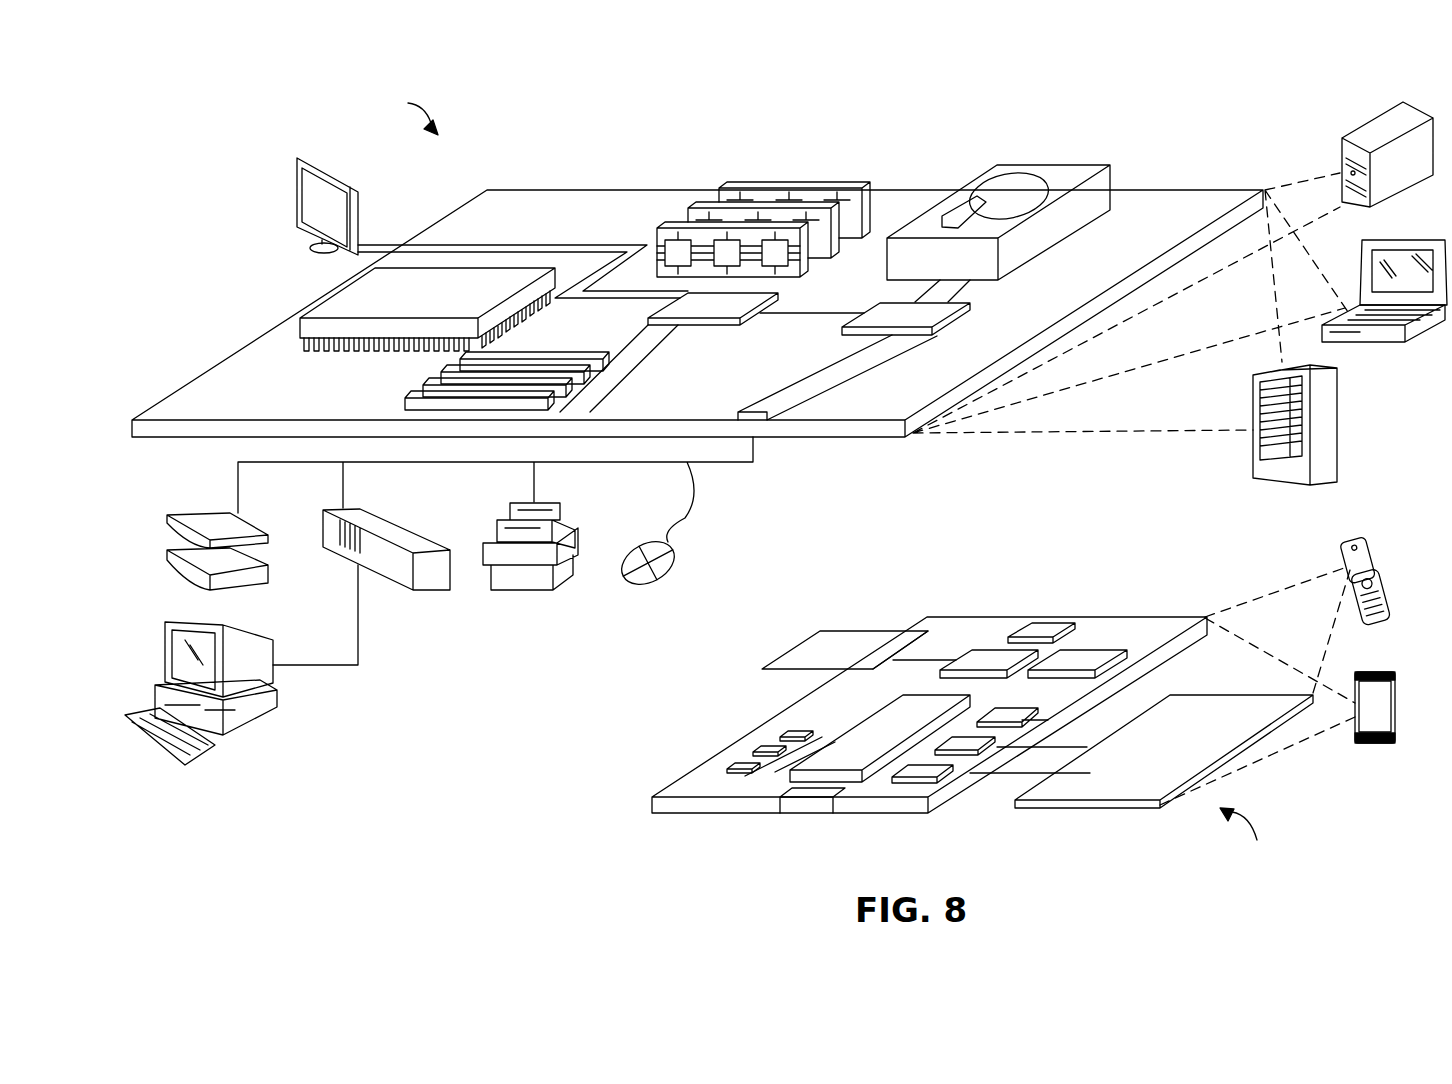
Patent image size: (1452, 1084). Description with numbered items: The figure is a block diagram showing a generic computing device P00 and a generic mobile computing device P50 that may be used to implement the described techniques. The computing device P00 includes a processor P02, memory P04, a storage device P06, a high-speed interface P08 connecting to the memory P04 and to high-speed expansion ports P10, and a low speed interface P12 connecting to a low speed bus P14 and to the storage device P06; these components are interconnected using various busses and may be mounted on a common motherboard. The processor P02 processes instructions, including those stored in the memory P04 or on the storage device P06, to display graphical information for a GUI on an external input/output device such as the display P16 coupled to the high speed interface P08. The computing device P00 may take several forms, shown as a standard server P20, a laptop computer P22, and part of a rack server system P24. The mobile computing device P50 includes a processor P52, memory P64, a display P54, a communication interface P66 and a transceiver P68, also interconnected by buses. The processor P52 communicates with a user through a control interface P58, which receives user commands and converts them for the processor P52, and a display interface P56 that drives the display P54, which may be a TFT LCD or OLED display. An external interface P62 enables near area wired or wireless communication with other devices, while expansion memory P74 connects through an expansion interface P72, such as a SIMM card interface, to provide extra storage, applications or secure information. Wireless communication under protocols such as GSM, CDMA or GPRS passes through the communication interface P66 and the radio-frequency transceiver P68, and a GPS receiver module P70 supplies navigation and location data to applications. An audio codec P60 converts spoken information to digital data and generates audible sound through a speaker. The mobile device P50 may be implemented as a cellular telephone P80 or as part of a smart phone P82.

The computing device P00 is at (737, 428).
The processor P02 is at (320, 298).
The memory P04 is at (796, 186).
The storage device P06 is at (1042, 167).
The high-speed interface P08 is at (726, 306).
The high-speed expansion ports P10 is at (430, 385).
The low speed interface P12 is at (877, 312).
The low speed bus P14 is at (760, 407).
The display P16 is at (300, 158).
The standard server P20 is at (1363, 133).
The laptop computer P22 is at (1421, 238).
The rack server system P24 is at (1337, 425).
The mobile computer device P50 is at (1003, 711).
The processor P52 is at (848, 750).
The display P54 is at (1205, 710).
The display interface P56 is at (935, 772).
The control interface P58 is at (972, 743).
The audio codec P60 is at (1012, 707).
The external interface P62 is at (807, 800).
The memory P64 is at (758, 755).
The communication interface P66 is at (990, 653).
The transceiver P68 is at (1087, 653).
The GPS receiver module P70 is at (1045, 630).
The expansion interface P72 is at (910, 630).
The expansion memory P74 is at (822, 630).
The cellular telephone P80 is at (1360, 540).
The smart phone P82 is at (1367, 673).